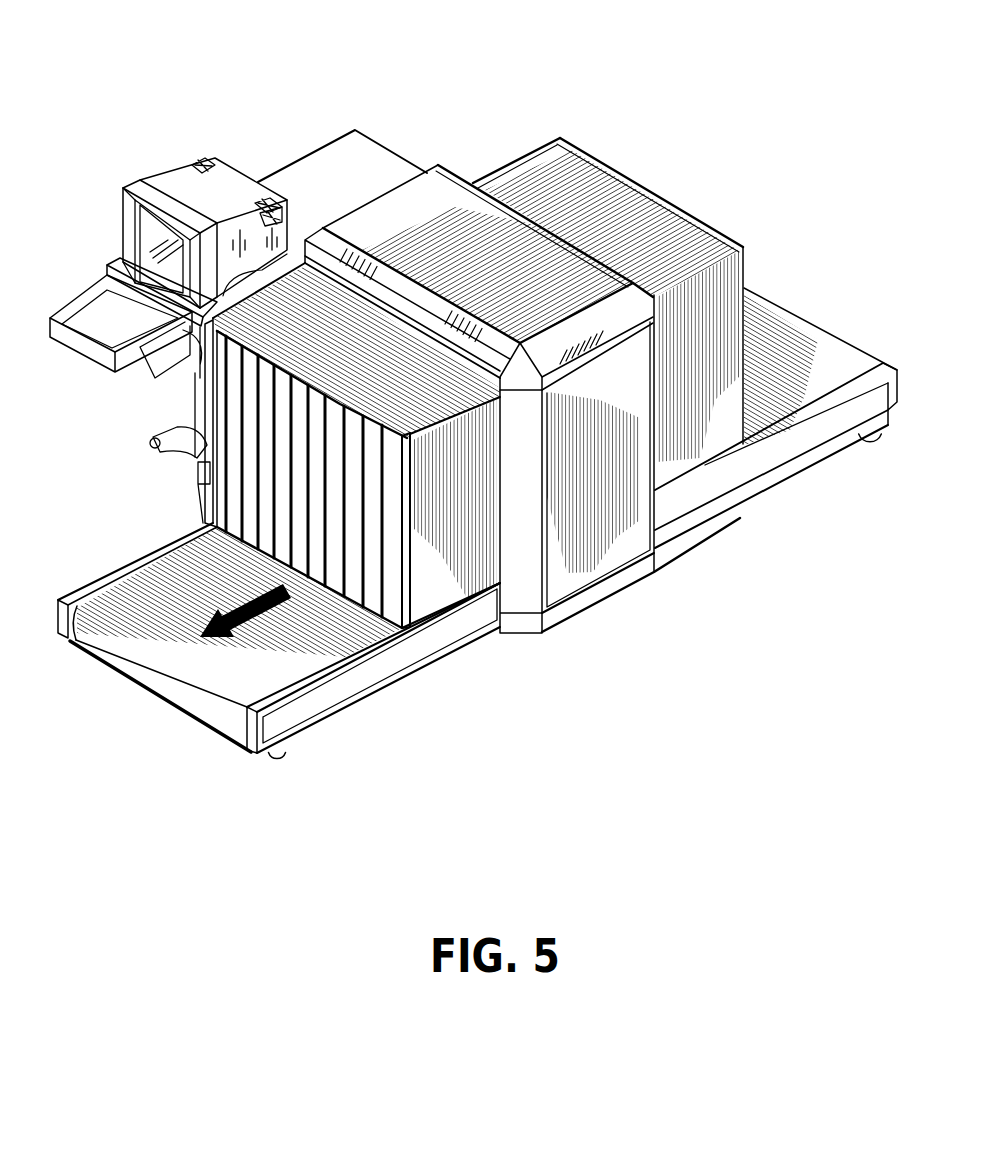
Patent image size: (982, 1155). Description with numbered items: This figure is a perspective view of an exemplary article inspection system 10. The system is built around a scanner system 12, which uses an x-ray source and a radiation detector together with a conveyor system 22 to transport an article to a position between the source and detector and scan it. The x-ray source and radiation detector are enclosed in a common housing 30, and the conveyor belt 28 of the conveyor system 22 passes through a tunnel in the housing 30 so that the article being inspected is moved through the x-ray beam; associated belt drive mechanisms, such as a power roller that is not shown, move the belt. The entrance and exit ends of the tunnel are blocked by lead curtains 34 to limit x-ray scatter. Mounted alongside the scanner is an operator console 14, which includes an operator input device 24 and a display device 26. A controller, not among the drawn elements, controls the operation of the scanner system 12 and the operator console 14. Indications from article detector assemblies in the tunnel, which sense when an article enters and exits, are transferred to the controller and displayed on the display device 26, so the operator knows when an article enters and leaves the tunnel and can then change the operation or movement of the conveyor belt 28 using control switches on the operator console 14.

The article inspection system 10 is at (656, 104).
The scanner system 12 is at (733, 235).
The operator console 14 is at (170, 164).
The conveyor system 22 is at (816, 357).
The operator input device 24 is at (85, 302).
The display device 26 is at (227, 177).
The conveyor belt 28 is at (147, 652).
The housing 30 is at (597, 580).
The lead curtains 34 is at (357, 577).